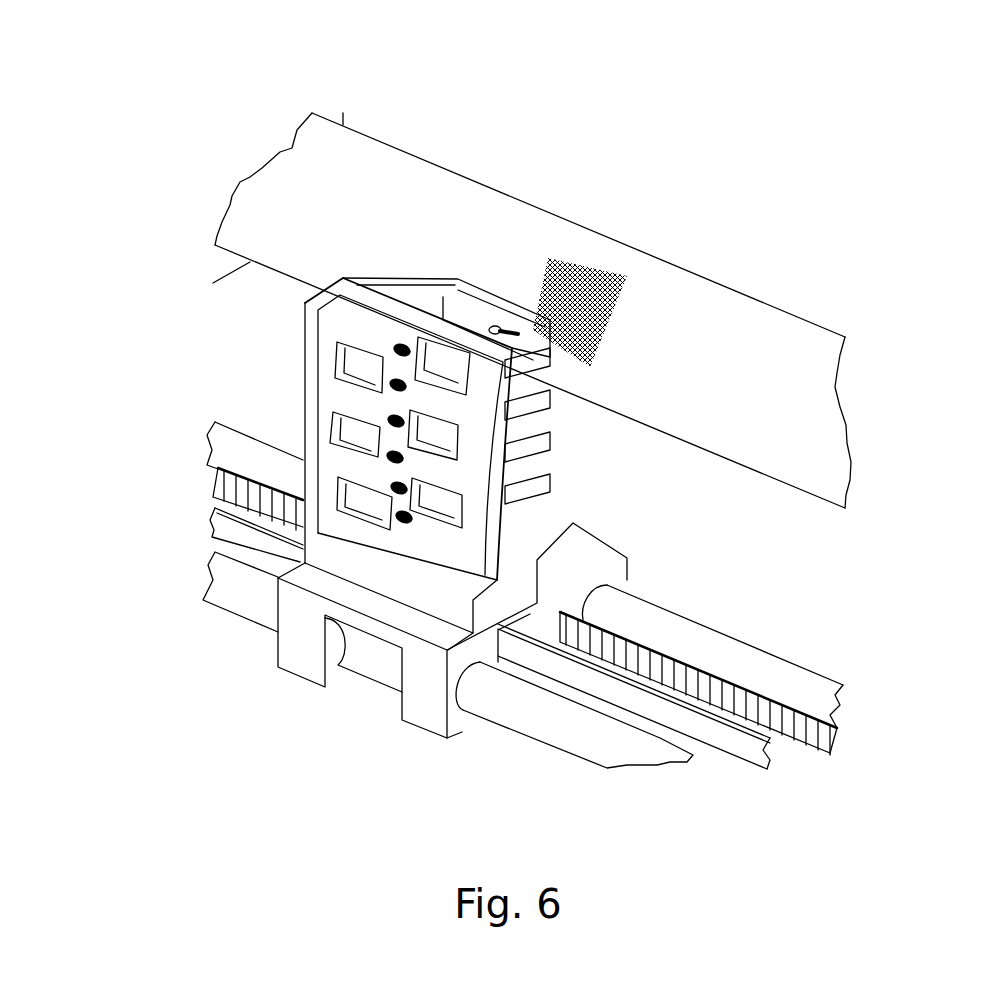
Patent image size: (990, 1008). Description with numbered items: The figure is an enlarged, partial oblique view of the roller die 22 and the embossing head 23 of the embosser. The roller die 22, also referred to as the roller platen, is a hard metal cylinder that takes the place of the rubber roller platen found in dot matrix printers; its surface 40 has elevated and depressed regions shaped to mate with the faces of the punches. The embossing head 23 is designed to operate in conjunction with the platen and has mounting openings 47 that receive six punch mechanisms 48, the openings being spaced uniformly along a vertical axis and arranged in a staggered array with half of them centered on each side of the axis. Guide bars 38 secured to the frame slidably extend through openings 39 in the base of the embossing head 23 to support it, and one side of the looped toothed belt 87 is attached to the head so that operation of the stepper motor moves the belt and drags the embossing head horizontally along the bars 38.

The roller die 22 is at (678, 303).
The surface 40 is at (770, 403).
The punch mechanisms 48 is at (458, 367).
The mounting openings 47 is at (418, 432).
The embossing head 23 is at (392, 582).
The openings 39 is at (610, 587).
The toothed belt 87 is at (222, 528).
The guide bars 38 is at (777, 665).